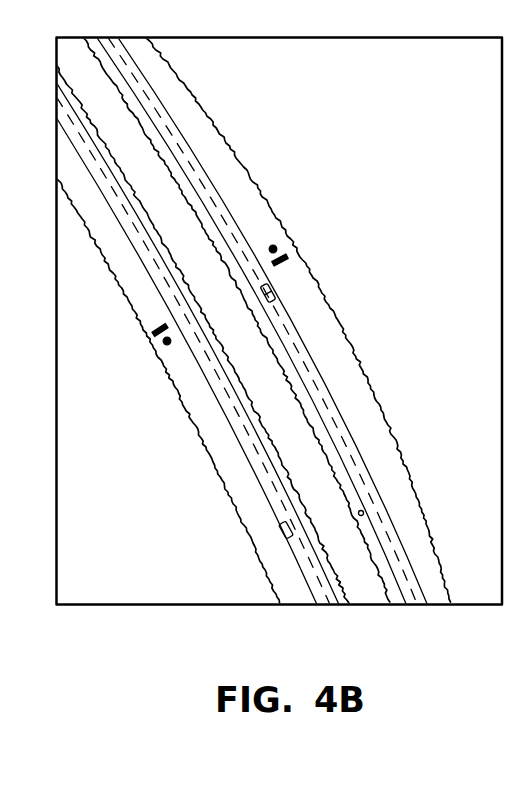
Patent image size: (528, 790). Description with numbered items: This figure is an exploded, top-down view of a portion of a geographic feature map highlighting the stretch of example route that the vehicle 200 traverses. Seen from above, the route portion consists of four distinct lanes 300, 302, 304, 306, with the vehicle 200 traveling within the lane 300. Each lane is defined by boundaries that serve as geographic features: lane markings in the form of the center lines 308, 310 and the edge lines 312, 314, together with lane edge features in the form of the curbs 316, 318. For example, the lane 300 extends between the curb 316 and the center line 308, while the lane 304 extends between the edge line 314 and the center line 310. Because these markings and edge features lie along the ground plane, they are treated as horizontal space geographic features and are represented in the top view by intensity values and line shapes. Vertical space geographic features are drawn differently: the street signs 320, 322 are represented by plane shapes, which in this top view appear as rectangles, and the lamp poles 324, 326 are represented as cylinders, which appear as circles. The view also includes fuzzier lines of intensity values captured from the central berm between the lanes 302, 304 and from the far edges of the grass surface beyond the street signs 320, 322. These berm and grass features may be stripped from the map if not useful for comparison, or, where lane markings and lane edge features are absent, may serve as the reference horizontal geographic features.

The vehicle 200 is at (276, 291).
The lane 300 is at (353, 475).
The lane 302 is at (361, 517).
The lane 304 is at (284, 526).
The lane 306 is at (285, 538).
The center line 308 is at (322, 397).
The center line 310 is at (245, 433).
The edge line 312 is at (330, 441).
The edge line 314 is at (276, 479).
The curb 316 is at (289, 337).
The curb 318 is at (228, 419).
The street sign 320 is at (288, 257).
The street sign 322 is at (153, 333).
The lamp pole 324 is at (276, 246).
The lamp pole 326 is at (164, 346).